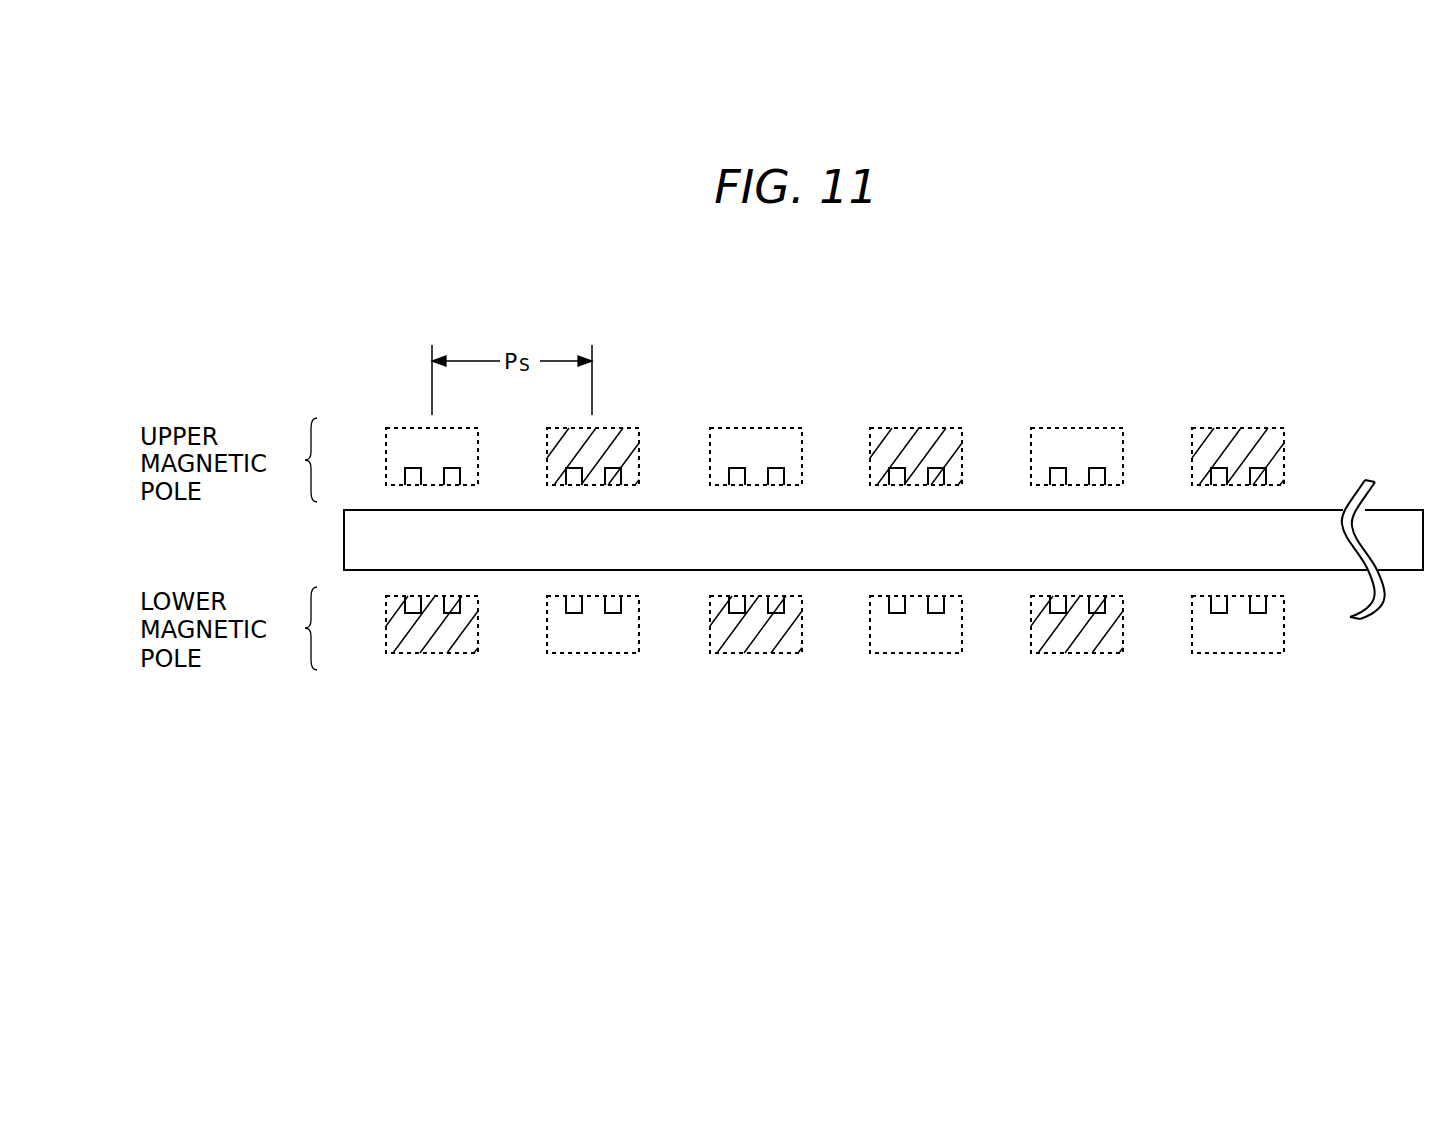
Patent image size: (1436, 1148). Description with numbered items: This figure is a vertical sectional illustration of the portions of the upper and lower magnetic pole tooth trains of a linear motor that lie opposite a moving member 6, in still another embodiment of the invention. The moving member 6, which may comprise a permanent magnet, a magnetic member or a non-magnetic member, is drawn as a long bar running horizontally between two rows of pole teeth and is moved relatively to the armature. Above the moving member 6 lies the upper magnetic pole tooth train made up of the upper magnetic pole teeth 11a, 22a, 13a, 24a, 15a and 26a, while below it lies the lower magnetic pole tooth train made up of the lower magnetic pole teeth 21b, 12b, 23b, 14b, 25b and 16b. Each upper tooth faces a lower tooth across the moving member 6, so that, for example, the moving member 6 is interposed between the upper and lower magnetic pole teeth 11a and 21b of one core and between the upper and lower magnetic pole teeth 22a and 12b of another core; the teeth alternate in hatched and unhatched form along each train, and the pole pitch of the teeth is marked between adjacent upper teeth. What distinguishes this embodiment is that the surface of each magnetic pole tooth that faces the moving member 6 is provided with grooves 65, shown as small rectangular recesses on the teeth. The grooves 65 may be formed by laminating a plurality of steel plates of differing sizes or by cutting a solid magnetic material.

The moving member 6 is at (1300, 510).
The upper magnetic pole tooth 11a is at (403, 427).
The upper magnetic pole tooth 22a is at (627, 427).
The upper magnetic pole tooth 13a is at (757, 427).
The upper magnetic pole tooth 24a is at (913, 427).
The upper magnetic pole tooth 15a is at (1077, 427).
The upper magnetic pole tooth 26a is at (1233, 427).
The lower magnetic pole tooth 21b is at (433, 653).
The lower magnetic pole tooth 12b is at (593, 655).
The lower magnetic pole tooth 23b is at (763, 653).
The lower magnetic pole tooth 14b is at (918, 655).
The lower magnetic pole tooth 25b is at (1085, 653).
The lower magnetic pole tooth 16b is at (1247, 653).
The grooves 65 is at (780, 467).